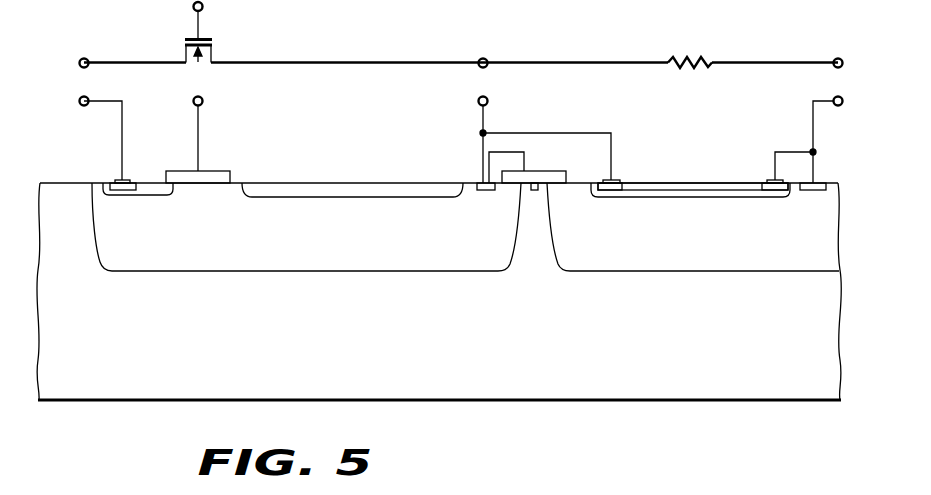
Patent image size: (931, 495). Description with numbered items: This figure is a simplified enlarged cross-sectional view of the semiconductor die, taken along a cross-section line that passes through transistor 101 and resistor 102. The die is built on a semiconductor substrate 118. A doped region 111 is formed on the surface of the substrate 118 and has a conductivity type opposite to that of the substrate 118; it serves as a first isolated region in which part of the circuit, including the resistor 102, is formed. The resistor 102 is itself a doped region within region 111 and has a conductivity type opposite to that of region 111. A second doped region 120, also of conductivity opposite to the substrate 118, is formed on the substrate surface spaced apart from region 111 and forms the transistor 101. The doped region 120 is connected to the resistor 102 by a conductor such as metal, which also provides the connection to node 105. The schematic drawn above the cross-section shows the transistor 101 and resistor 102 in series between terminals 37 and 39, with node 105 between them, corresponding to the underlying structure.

The terminal 37 is at (81, 67).
The terminal 39 is at (838, 57).
The transistor 101 is at (216, 42).
The resistor 102 is at (697, 53).
The node 105 is at (487, 67).
The doped region 111 is at (750, 261).
The semiconductor substrate 118 is at (423, 372).
The doped region 120 is at (305, 261).